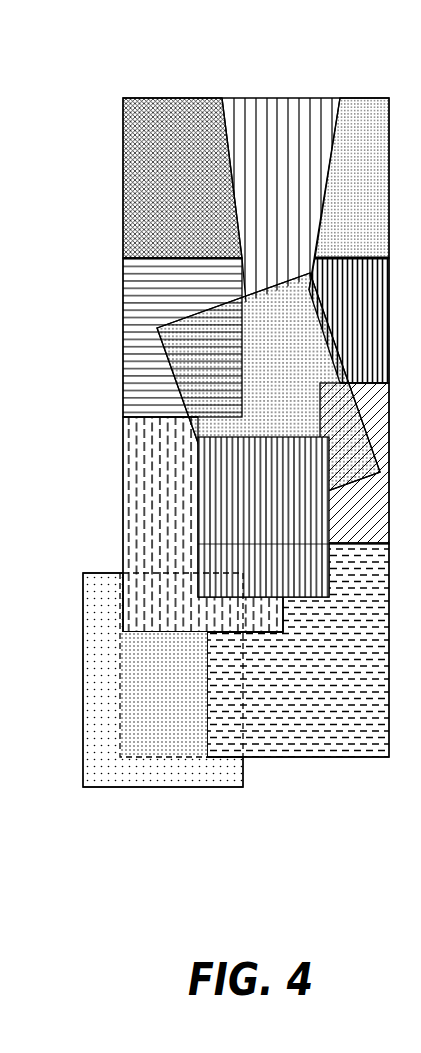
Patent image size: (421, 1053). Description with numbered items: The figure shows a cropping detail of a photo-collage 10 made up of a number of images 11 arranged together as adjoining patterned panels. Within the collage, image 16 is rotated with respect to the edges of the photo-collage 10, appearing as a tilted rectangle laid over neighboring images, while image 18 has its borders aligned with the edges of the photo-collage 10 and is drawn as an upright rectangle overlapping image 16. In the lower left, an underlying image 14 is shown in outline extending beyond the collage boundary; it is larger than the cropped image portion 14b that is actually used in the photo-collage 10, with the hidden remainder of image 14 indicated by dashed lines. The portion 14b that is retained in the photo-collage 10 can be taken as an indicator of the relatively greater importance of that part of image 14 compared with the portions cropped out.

The photo-collage 10 is at (265, 86).
The images 11 is at (122, 305).
The image 14 is at (82, 707).
The cropped image portion 14b is at (121, 758).
The image 16 is at (167, 377).
The image 18 is at (197, 507).